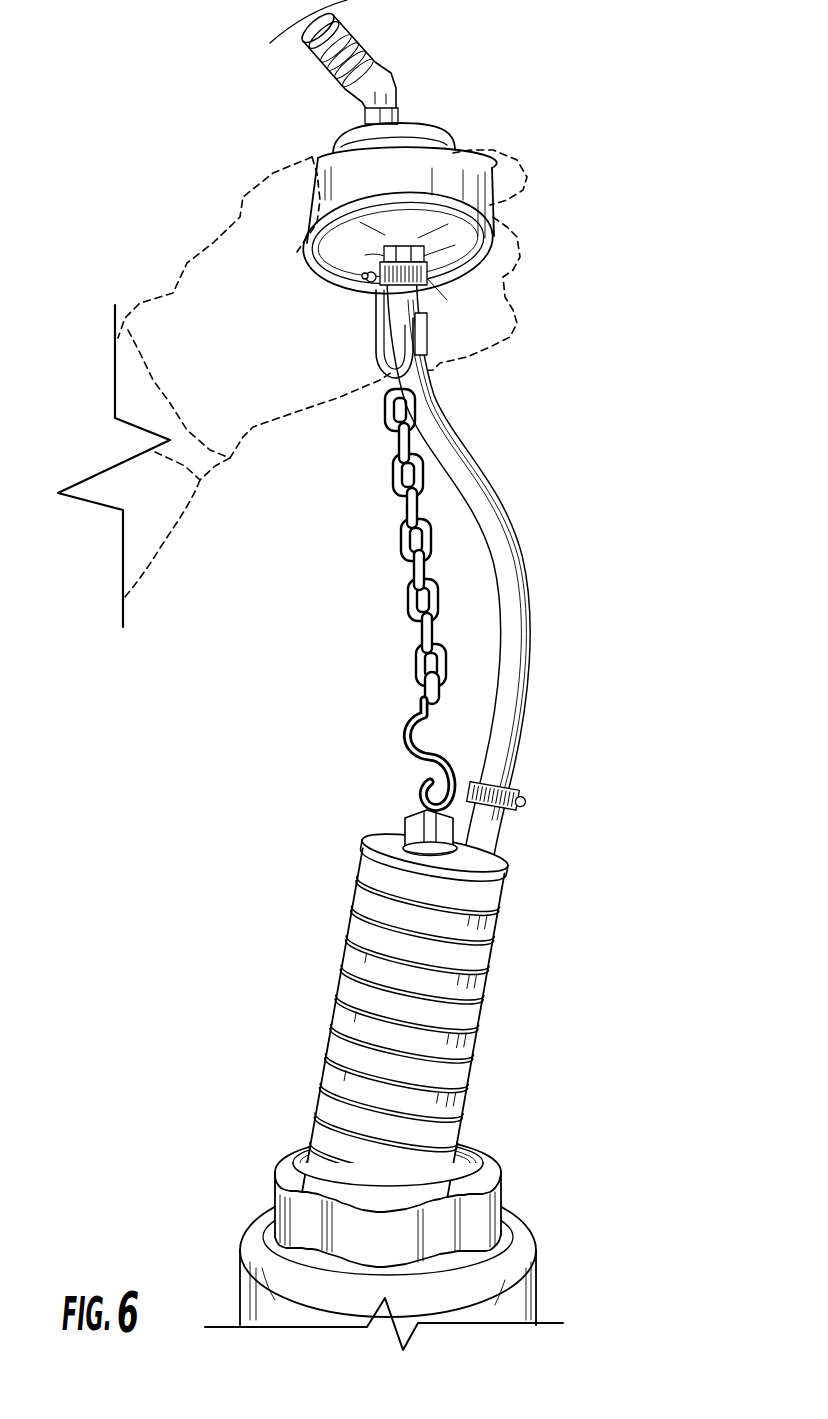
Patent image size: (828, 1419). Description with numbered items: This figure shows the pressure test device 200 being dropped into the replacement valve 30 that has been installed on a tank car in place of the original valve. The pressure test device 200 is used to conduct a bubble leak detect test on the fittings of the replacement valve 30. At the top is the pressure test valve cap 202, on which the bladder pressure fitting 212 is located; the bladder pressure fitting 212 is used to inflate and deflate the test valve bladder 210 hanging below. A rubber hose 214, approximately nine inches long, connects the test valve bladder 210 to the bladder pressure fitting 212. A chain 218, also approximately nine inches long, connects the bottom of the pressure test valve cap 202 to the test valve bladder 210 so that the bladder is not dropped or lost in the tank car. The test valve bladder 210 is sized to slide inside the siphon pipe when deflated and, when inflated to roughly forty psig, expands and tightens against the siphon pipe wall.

The pressure test device 200 is at (310, 152).
The pressure test valve cap 202 is at (445, 295).
The test valve bladder 210 is at (427, 1040).
The bladder pressure fitting 212 is at (372, 63).
The rubber hose 214 is at (513, 643).
The chain 218 is at (405, 598).
The replacement valve 30 is at (467, 1215).